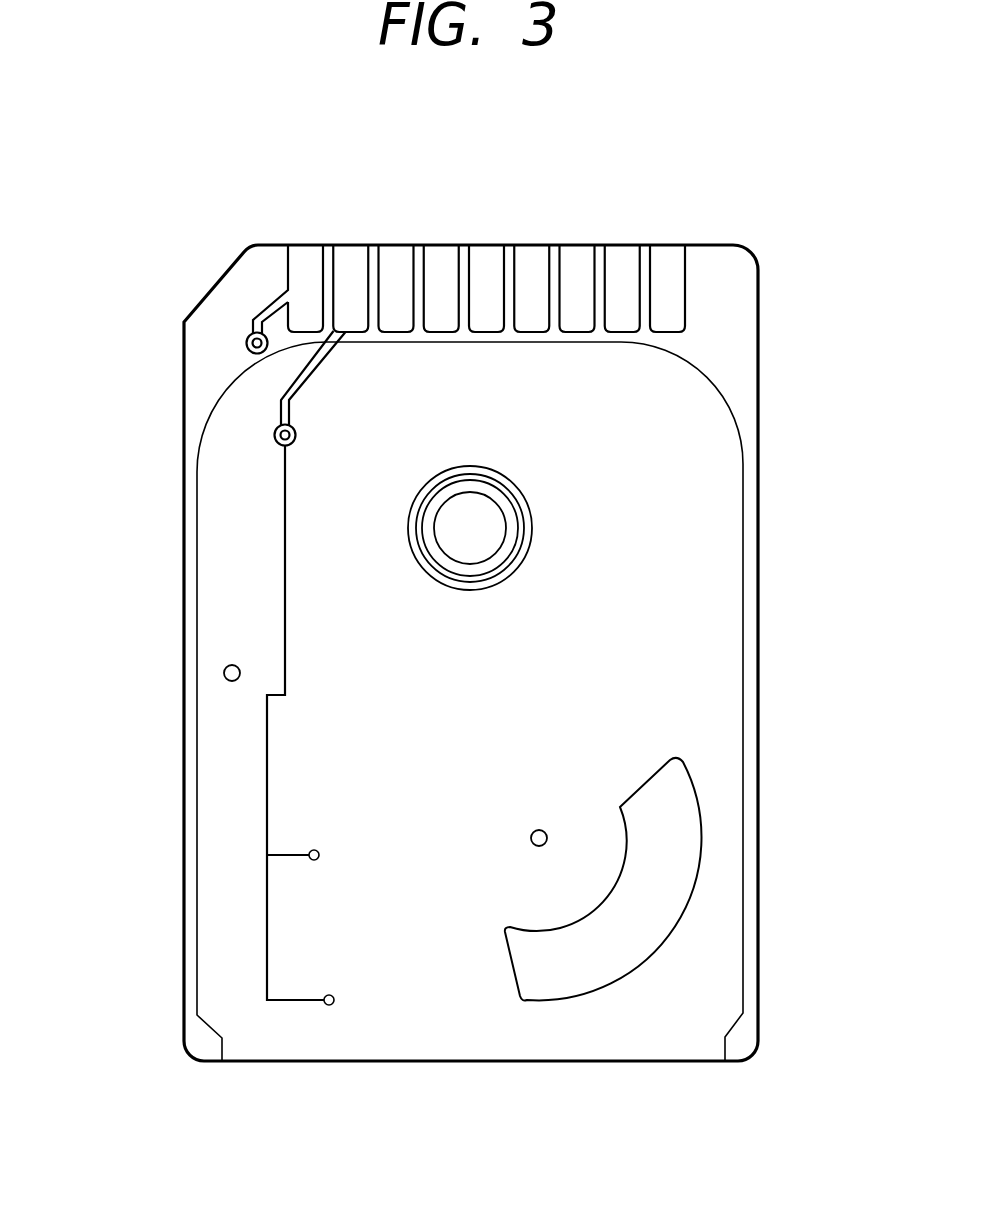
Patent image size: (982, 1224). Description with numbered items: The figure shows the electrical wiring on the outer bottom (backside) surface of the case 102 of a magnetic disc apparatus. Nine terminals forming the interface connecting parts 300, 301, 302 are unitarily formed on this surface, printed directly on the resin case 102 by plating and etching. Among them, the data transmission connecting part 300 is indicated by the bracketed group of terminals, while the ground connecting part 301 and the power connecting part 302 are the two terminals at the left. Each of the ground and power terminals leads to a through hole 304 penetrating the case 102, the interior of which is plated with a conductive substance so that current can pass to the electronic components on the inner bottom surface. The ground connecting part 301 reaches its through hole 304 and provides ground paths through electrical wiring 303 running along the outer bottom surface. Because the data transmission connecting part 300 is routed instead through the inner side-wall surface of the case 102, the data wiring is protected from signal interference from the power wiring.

The case 102 is at (760, 642).
The data transmission connecting part 300 is at (673, 228).
The ground connecting part 301 is at (348, 250).
The power connecting part 302 is at (307, 250).
The electrical wiring 303 is at (267, 930).
The through hole 304 is at (274, 437).